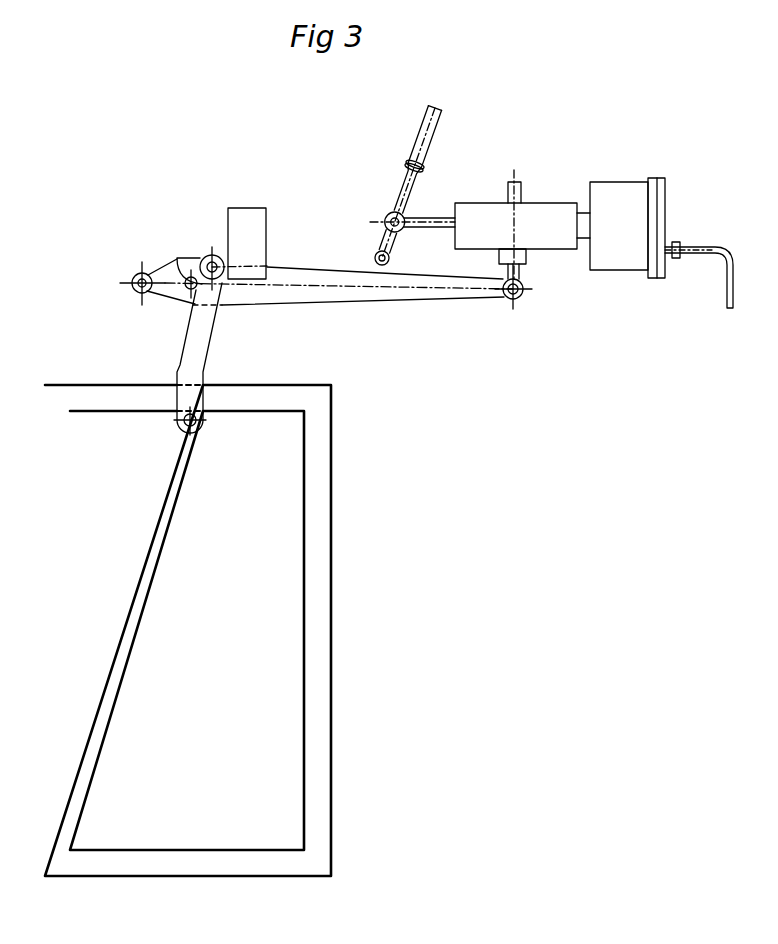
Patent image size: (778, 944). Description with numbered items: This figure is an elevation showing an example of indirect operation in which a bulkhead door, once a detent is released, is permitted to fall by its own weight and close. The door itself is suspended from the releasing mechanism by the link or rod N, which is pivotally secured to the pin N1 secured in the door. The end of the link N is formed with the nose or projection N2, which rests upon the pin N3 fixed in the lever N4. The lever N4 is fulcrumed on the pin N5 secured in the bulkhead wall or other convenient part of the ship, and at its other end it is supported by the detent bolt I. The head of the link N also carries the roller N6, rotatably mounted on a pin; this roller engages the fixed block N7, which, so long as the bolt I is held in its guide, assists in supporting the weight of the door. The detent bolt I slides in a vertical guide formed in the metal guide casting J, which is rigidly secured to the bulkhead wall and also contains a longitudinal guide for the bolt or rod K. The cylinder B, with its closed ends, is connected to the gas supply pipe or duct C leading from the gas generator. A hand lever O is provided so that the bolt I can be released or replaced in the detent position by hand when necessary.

The link or rod N is at (195, 371).
The pin N1 is at (186, 428).
The nose or projection N2 is at (188, 259).
The pin N3 is at (187, 292).
The lever N4 is at (305, 304).
The pin N5 is at (138, 291).
The roller N6 is at (210, 255).
The fixed block N7 is at (250, 208).
The lever O is at (413, 132).
The bolt or rod K is at (426, 218).
The detent or bolt rod I is at (518, 193).
The guide casting J is at (547, 239).
The cylinder B is at (620, 196).
The gas supply pipe or duct C is at (725, 291).